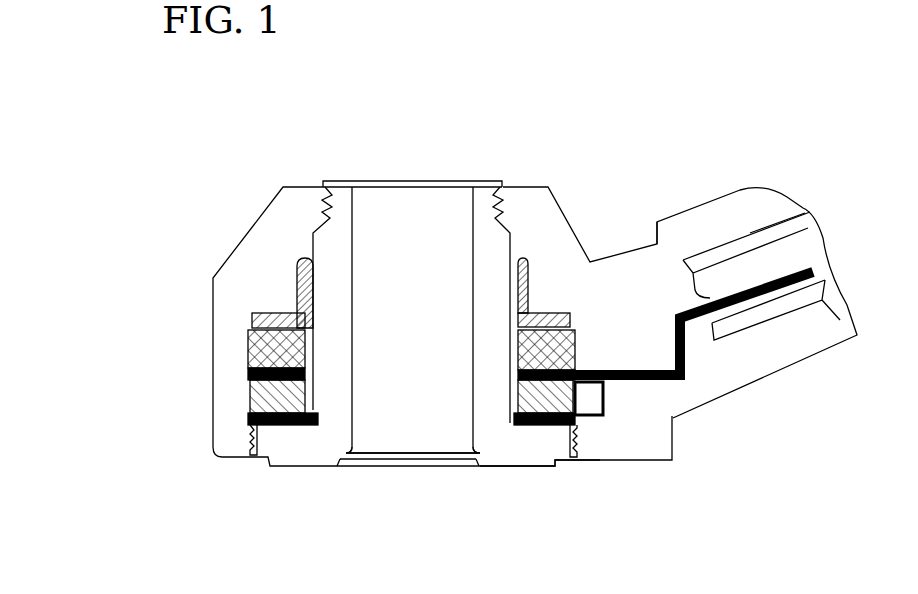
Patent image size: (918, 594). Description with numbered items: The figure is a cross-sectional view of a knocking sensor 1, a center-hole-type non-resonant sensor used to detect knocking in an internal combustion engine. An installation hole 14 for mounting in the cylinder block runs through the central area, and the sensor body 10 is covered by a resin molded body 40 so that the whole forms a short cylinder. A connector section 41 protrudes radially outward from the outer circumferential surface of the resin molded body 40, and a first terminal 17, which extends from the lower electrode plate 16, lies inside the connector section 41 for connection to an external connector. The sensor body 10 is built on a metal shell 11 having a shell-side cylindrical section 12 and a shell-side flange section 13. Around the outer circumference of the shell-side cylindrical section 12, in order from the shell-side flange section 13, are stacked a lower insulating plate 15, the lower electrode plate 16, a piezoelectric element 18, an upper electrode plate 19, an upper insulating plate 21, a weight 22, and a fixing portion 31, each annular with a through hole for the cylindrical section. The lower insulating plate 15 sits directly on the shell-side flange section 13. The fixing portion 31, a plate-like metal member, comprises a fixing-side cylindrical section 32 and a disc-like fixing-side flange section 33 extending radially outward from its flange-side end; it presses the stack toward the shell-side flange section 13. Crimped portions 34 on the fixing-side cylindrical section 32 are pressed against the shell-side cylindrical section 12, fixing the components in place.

The knocking sensor 1 is at (510, 122).
The sensor body 10 is at (345, 165).
The metal shell 11 is at (445, 523).
The shell-side cylindrical section 12 is at (473, 405).
The shell-side flange section 13 is at (522, 450).
The installation hole 14 is at (405, 200).
The lower insulating plate 15 is at (248, 425).
The lower electrode plate 16 is at (313, 415).
The first terminal 17 is at (824, 240).
The piezoelectric element 18 is at (250, 398).
The upper electrode plate 19 is at (312, 380).
The upper insulating plate 21 is at (248, 370).
The weight 22 is at (248, 350).
The fixing portion 31 is at (562, 152).
The fixing-side cylindrical section 32 is at (523, 256).
The fixing-side flange section 33 is at (551, 312).
The crimped portion 34 is at (293, 287).
The resin molded body 40 is at (288, 183).
The connector section 41 is at (740, 188).